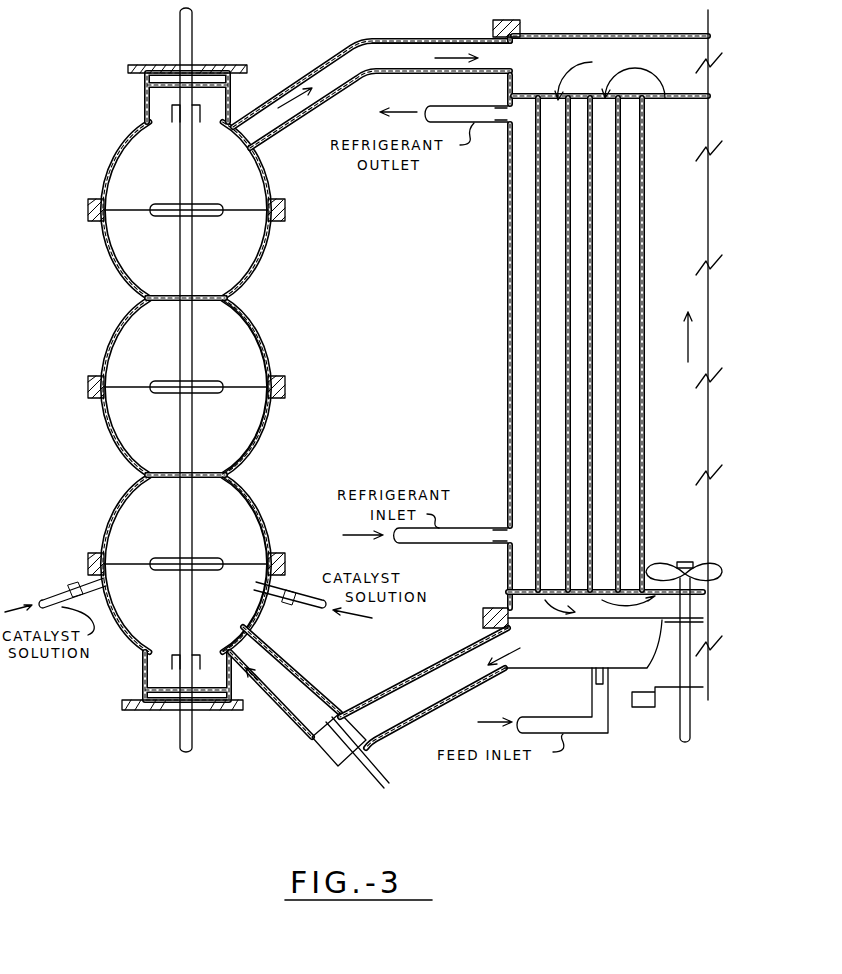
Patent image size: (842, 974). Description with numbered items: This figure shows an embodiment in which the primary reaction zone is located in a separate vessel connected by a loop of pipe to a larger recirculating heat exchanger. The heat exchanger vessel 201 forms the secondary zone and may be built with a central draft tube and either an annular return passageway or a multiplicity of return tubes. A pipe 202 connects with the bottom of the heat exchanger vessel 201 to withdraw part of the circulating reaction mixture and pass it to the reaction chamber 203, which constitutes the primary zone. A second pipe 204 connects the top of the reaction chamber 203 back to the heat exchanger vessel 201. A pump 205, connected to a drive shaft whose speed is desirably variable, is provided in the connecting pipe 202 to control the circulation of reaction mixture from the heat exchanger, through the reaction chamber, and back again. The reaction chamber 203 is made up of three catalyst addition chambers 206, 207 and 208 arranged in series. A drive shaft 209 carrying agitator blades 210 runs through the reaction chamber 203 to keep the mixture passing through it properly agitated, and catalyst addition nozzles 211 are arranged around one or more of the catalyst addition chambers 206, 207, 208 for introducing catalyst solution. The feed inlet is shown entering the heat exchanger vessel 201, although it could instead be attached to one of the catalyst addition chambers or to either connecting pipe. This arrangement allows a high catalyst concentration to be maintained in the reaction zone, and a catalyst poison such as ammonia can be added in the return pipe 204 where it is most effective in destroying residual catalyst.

The heat exchanger vessel 201 is at (507, 292).
The pipe 202 is at (458, 668).
The reaction chamber 203 is at (118, 328).
The second pipe 204 is at (393, 41).
The pump 205 is at (312, 740).
The catalyst addition chamber 206 is at (250, 521).
The catalyst addition chamber 207 is at (265, 355).
The catalyst addition chamber 208 is at (269, 188).
The drive shaft 209 is at (178, 741).
The agitator blades 210 is at (194, 205).
The catalyst addition nozzles 211 is at (78, 584).